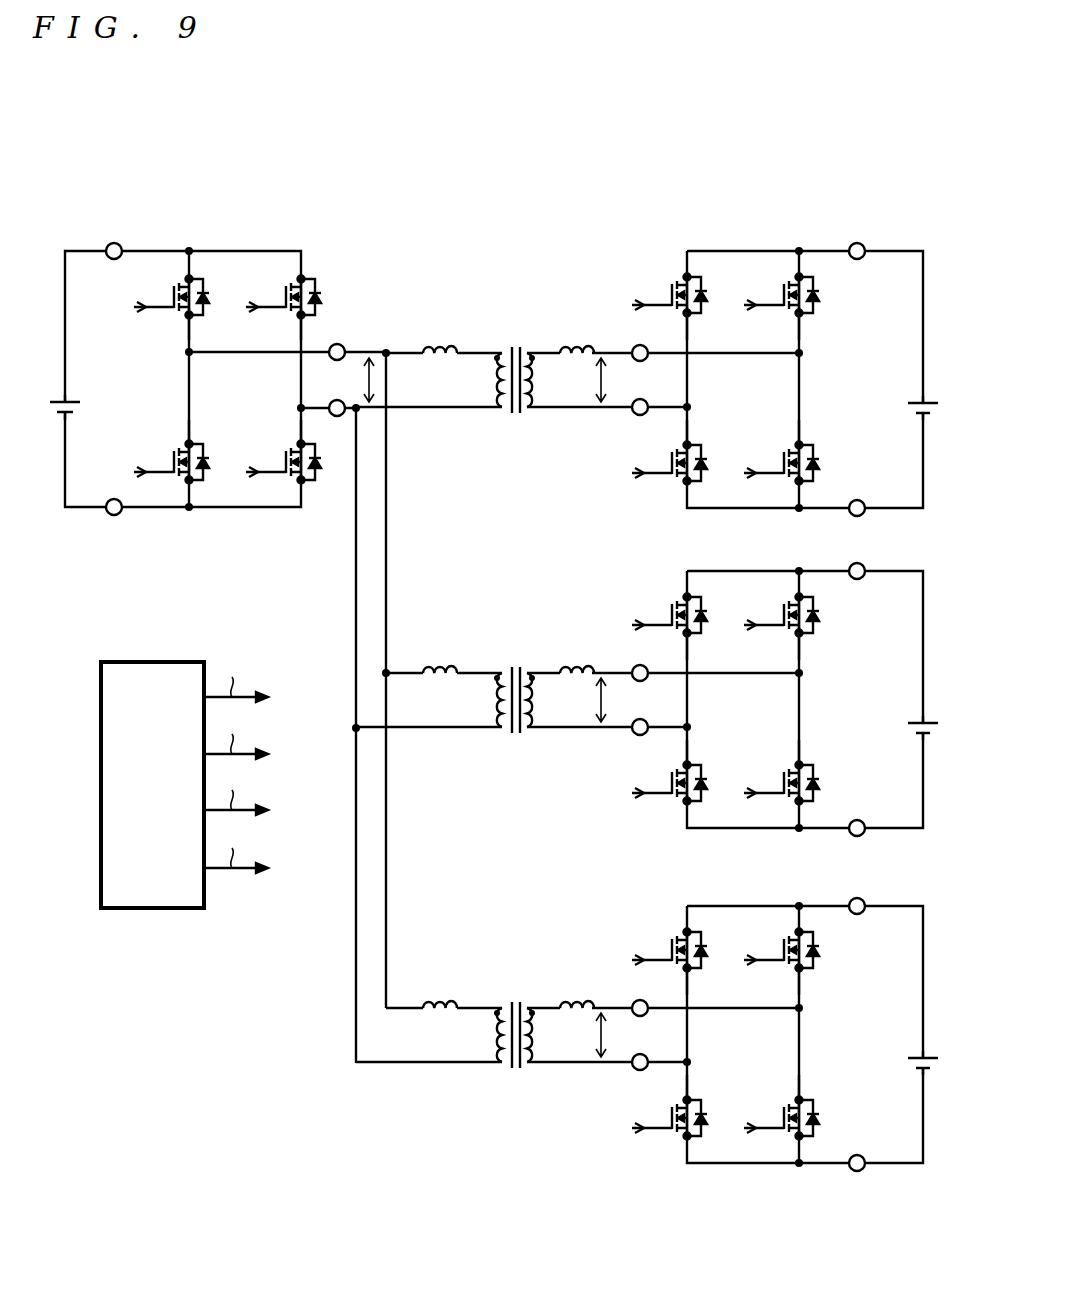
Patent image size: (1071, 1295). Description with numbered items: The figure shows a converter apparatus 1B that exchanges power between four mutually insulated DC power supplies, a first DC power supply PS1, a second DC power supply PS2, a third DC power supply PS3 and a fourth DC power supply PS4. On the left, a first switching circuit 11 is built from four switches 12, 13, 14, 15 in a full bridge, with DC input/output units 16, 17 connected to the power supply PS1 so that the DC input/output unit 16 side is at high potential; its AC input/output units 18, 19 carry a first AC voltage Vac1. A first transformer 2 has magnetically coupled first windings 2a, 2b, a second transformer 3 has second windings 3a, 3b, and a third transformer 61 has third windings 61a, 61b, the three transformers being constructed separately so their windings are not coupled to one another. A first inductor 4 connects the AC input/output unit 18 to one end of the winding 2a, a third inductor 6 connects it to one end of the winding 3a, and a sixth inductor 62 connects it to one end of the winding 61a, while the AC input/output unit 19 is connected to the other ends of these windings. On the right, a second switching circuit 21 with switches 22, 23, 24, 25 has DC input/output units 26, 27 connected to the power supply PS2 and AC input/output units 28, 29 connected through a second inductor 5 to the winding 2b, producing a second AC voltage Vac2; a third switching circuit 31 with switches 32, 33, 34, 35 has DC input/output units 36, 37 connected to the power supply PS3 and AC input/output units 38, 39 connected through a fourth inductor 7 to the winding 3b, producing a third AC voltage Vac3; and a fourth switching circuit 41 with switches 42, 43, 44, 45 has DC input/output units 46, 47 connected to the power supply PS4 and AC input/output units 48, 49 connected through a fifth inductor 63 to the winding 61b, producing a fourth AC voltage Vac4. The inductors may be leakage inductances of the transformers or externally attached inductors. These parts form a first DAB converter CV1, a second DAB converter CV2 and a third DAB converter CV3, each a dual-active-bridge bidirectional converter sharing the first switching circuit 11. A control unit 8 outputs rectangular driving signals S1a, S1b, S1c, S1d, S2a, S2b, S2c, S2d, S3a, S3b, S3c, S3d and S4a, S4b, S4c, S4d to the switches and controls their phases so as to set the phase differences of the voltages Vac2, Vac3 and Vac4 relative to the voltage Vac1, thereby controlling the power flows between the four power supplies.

The converter apparatus 1B is at (452, 171).
The first transformer 2 is at (513, 330).
The first winding 2a is at (497, 349).
The first winding 2b is at (530, 349).
The second transformer 3 is at (513, 650).
The second winding 3a is at (491, 670).
The second winding 3b is at (535, 670).
The first inductor 4 is at (441, 341).
The second inductor 5 is at (578, 341).
The third inductor 6 is at (440, 644).
The fourth inductor 7 is at (577, 644).
The control unit 8 is at (168, 662).
The first switching circuit 11 is at (218, 351).
The switch 12 is at (178, 316).
The switch 13 is at (179, 445).
The switch 14 is at (290, 316).
The switch 15 is at (289, 445).
The DC input/output unit 16 is at (112, 259).
The DC input/output unit 17 is at (112, 499).
The AC input/output unit 18 is at (338, 344).
The AC input/output unit 19 is at (337, 416).
The second switching circuit 21 is at (777, 351).
The switch 22 is at (697, 316).
The switch 23 is at (697, 444).
The switch 24 is at (786, 316).
The switch 25 is at (790, 444).
The DC input/output unit 26 is at (857, 260).
The DC input/output unit 27 is at (857, 499).
The AC input/output unit 28 is at (640, 345).
The AC input/output unit 29 is at (640, 415).
The third switching circuit 31 is at (777, 692).
The switch 32 is at (712, 653).
The switch 33 is at (707, 739).
The switch 34 is at (775, 653).
The switch 35 is at (780, 739).
The DC input/output unit 36 is at (872, 593).
The DC input/output unit 37 is at (872, 809).
The AC input/output unit 38 is at (622, 659).
The AC input/output unit 39 is at (622, 742).
The fourth switching circuit 41 is at (777, 1023).
The switch 42 is at (712, 988).
The switch 43 is at (707, 1074).
The switch 44 is at (775, 988).
The switch 45 is at (780, 1074).
The DC input/output unit 46 is at (872, 928).
The DC input/output unit 47 is at (872, 1144).
The AC input/output unit 48 is at (622, 994).
The AC input/output unit 49 is at (622, 1077).
The third transformer 61 is at (513, 980).
The third winding 61a is at (486, 1004).
The third winding 61b is at (540, 1004).
The sixth inductor 62 is at (434, 979).
The fifth inductor 63 is at (580, 979).
The first DAB converter CV1 is at (562, 218).
The second DAB converter CV2 is at (647, 675).
The third DAB converter CV3 is at (647, 1010).
The first DC power supply PS1 is at (67, 399).
The second DC power supply PS2 is at (923, 398).
The third DC power supply PS3 is at (884, 692).
The fourth DC power supply PS4 is at (884, 1027).
The first AC voltage Vac1 is at (370, 384).
The second AC voltage Vac2 is at (600, 384).
The third AC voltage Vac3 is at (558, 726).
The fourth AC voltage Vac4 is at (558, 1061).
The driving signal S1a is at (163, 297).
The driving signal S1b is at (163, 462).
The driving signal S1c is at (274, 297).
The driving signal S1d is at (274, 462).
The driving signal S2a is at (662, 295).
The driving signal S2b is at (662, 463).
The driving signal S2c is at (772, 295).
The driving signal S2d is at (772, 463).
The driving signal S3a is at (662, 615).
The driving signal S3b is at (662, 783).
The driving signal S3c is at (772, 615).
The driving signal S3d is at (772, 783).
The driving signal S4a is at (662, 950).
The driving signal S4b is at (662, 1118).
The driving signal S4c is at (772, 950).
The driving signal S4d is at (772, 1118).